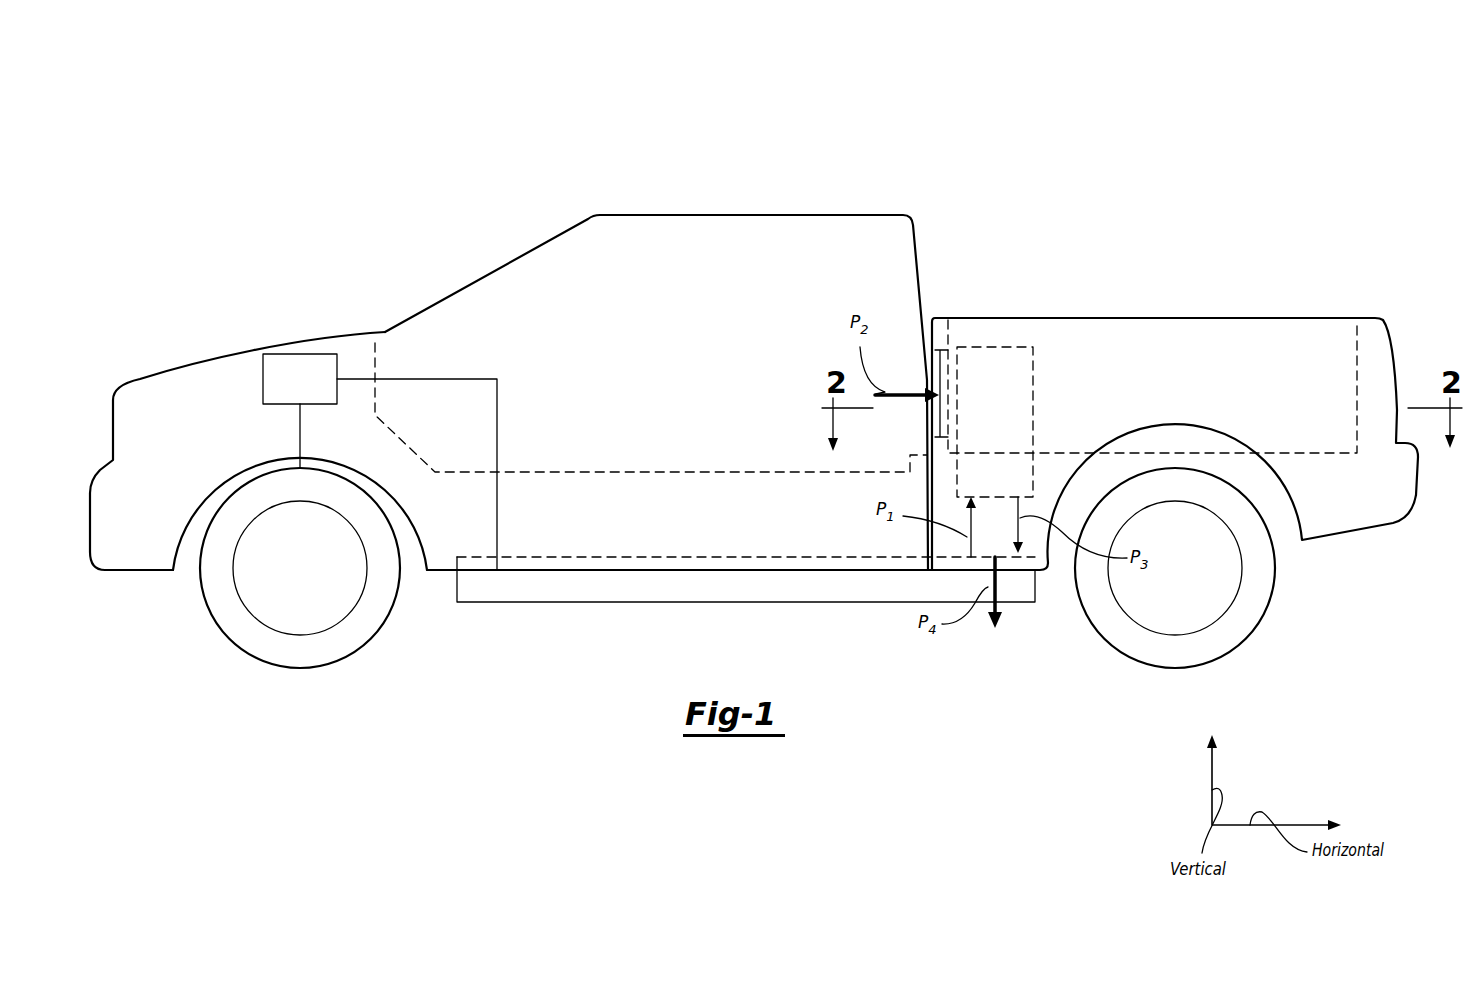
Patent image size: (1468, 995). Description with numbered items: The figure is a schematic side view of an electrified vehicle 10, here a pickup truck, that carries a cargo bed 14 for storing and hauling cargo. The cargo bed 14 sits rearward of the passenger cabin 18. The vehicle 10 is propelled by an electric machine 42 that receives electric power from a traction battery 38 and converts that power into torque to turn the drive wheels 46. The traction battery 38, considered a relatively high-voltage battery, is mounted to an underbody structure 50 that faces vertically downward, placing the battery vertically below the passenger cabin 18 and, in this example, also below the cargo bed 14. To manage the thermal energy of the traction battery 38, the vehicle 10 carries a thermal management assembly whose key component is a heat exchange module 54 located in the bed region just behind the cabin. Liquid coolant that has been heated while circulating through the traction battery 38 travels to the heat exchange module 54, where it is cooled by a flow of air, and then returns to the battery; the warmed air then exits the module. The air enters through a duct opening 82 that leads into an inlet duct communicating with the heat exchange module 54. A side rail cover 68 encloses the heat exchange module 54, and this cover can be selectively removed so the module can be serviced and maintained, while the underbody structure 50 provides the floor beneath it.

The vehicle 10 is at (960, 186).
The cargo bed 14 is at (1143, 274).
The passenger cabin 18 is at (733, 235).
The traction battery 38 is at (517, 603).
The electric machine 42 is at (300, 354).
The drive wheels 46 is at (300, 668).
The underbody structure 50 is at (440, 571).
The heat exchange module 54 is at (1033, 463).
The side rail cover 68 is at (1008, 320).
The duct opening 82 is at (925, 366).